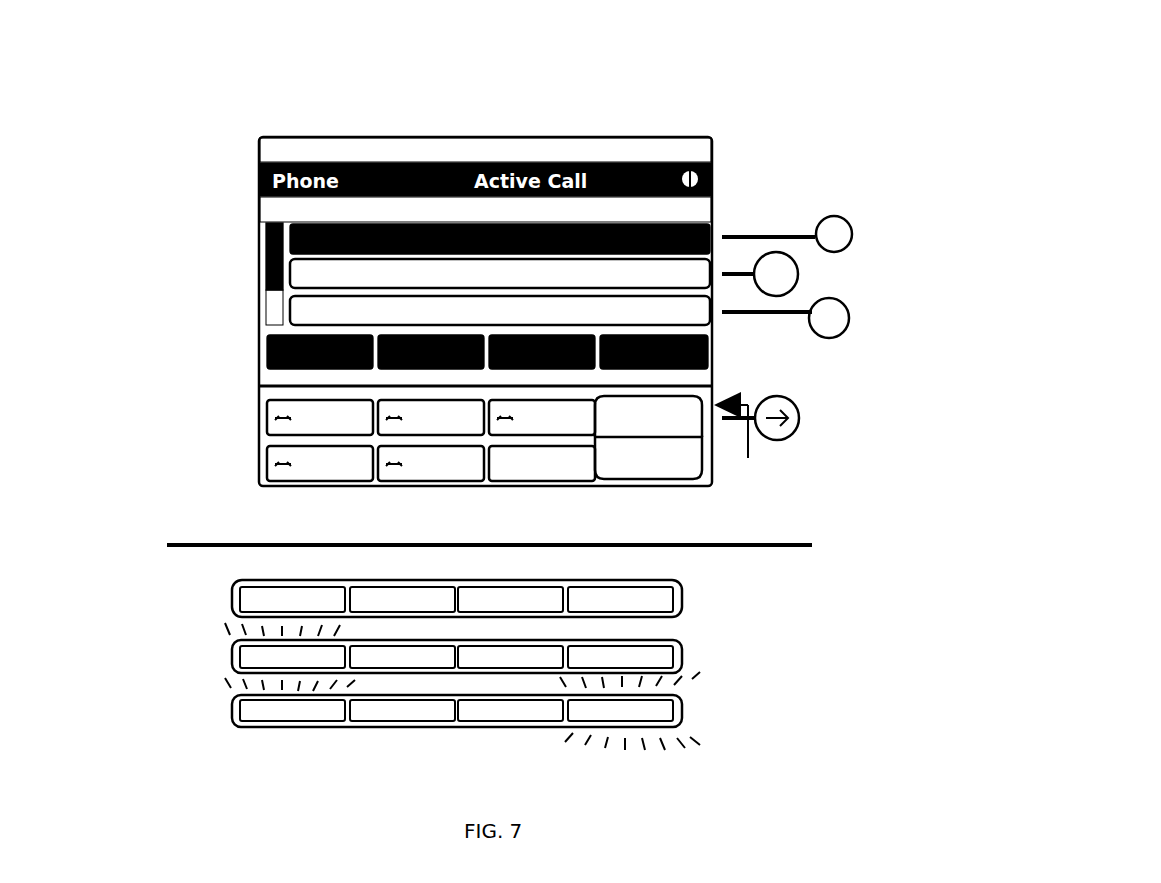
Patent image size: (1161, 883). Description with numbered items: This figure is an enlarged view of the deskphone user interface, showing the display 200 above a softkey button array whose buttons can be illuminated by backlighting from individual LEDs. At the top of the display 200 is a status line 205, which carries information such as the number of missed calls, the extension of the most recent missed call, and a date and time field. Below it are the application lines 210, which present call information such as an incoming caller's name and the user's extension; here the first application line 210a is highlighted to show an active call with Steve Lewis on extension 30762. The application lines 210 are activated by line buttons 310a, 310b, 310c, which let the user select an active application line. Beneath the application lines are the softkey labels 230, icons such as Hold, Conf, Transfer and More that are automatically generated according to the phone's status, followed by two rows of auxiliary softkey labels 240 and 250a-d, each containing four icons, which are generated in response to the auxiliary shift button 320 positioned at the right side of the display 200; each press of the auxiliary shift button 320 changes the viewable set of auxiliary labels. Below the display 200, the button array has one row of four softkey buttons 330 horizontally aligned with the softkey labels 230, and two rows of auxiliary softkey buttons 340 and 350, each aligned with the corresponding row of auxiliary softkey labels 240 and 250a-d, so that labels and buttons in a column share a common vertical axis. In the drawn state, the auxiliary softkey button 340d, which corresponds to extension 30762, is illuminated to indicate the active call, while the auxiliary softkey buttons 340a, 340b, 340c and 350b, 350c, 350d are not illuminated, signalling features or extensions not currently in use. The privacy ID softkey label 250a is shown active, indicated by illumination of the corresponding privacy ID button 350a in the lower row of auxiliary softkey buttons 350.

The display 200 is at (657, 115).
The status line 205 is at (236, 150).
The application lines 210 is at (250, 271).
The first application line 210a is at (713, 212).
The softkey labels 230 is at (714, 352).
The auxiliary softkey labels 240 is at (688, 407).
The auxiliary softkey labels 250a-d is at (714, 472).
The privacy ID softkey label 250a is at (640, 471).
The line button 310a is at (852, 232).
The line button 310b is at (810, 275).
The line button 310c is at (848, 318).
The auxiliary shift button 320 is at (812, 418).
The softkey buttons 330 is at (684, 593).
The auxiliary softkey buttons 340 is at (684, 652).
The auxiliary softkey button 340a is at (625, 655).
The auxiliary softkey button 340b is at (508, 657).
The auxiliary softkey button 340c is at (405, 660).
The auxiliary softkey button 340d is at (240, 652).
The auxiliary softkey buttons 350 is at (684, 713).
The privacy ID button 350a is at (665, 712).
The auxiliary softkey button 350b is at (500, 712).
The auxiliary softkey button 350c is at (372, 712).
The auxiliary softkey button 350d is at (258, 712).